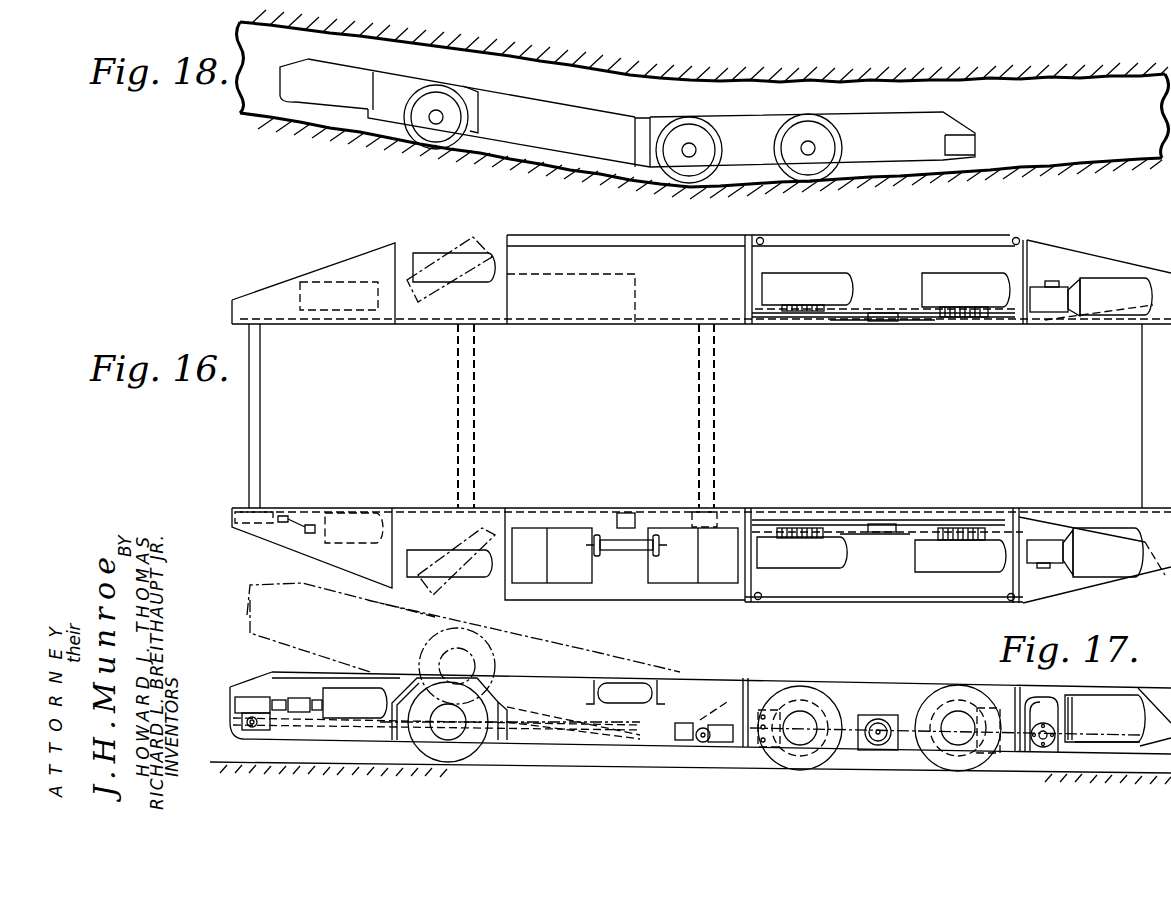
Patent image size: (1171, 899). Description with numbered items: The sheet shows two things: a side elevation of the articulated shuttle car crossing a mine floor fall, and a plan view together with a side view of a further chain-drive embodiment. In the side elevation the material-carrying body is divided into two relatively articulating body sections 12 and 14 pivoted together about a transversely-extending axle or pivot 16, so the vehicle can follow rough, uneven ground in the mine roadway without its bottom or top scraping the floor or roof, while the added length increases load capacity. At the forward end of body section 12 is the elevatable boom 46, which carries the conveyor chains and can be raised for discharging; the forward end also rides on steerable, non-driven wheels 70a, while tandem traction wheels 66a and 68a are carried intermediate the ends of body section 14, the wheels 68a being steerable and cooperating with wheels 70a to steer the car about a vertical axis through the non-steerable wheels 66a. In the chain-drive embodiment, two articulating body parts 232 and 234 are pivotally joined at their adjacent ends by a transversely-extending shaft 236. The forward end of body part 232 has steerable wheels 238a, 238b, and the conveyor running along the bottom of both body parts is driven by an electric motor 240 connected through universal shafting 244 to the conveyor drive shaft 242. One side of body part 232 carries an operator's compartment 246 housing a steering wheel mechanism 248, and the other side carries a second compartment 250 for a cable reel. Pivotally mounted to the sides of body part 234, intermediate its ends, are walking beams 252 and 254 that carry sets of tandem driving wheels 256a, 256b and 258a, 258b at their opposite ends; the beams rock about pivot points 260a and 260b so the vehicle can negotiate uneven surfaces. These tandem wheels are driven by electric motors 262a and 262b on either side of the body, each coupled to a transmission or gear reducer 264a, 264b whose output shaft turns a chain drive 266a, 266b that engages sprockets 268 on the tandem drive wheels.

In FIG. 18, the body section 12 is at (543, 84).
In FIG. 18, the body section 14 is at (768, 122).
In FIG. 18, the transversely-extending axle or pivot 16 is at (660, 186).
In FIG. 18, the elevatable boom 46 is at (336, 53).
In FIG. 18, the traction wheel 66a is at (690, 165).
In FIG. 18, the traction wheel 68a is at (812, 167).
In FIG. 18, the steerable non-driven wheel 70a is at (427, 128).
In FIG. 16, the body part 232 is at (596, 441).
In FIG. 17, the body part 232 is at (568, 660).
In FIG. 16, the body part 234 is at (958, 441).
In FIG. 17, the body part 234 is at (927, 670).
In FIG. 16, the transversely-extending shaft 236 is at (716, 441).
In FIG. 17, the transversely-extending shaft 236 is at (712, 742).
In FIG. 16, the steerable wheel 238a is at (471, 578).
In FIG. 17, the steerable wheel 238a is at (452, 753).
In FIG. 16, the steerable wheel 238b is at (432, 253).
In FIG. 16, the electric motor 240 is at (345, 548).
In FIG. 17, the electric motor 240 is at (367, 716).
In FIG. 16, the drive shaft 242 is at (252, 437).
In FIG. 16, the universal shafting 244 is at (306, 512).
In FIG. 17, the universal shafting 244 is at (298, 714).
In FIG. 16, the operator's compartment 246 is at (634, 599).
In FIG. 17, the operator's compartment 246 is at (604, 748).
In FIG. 17, the steering wheel mechanism 248 is at (628, 680).
In FIG. 16, the second compartment 250 is at (622, 241).
In FIG. 17, the walking beam 252 is at (885, 752).
In FIG. 16, the walking beam 254 is at (872, 324).
In FIG. 16, the tandem driving wheel 256a is at (808, 558).
In FIG. 17, the tandem driving wheel 256a is at (787, 688).
In FIG. 16, the tandem driving wheel 256b is at (838, 267).
In FIG. 16, the tandem driving wheel 258a is at (970, 560).
In FIG. 17, the tandem driving wheel 258a is at (967, 765).
In FIG. 16, the tandem driving wheel 258b is at (995, 267).
In FIG. 16, the pivot point 260a is at (880, 533).
In FIG. 17, the pivot point 260a is at (875, 718).
In FIG. 16, the pivot point 260b is at (887, 324).
In FIG. 16, the electric motor 262a is at (1112, 568).
In FIG. 17, the electric motor 262a is at (1113, 728).
In FIG. 16, the electric motor 262b is at (1120, 285).
In FIG. 16, the transmission or gear reducer 264a is at (1038, 556).
In FIG. 16, the transmission or gear reducer 264b is at (1058, 288).
In FIG. 16, the chain drive 266a is at (905, 535).
In FIG. 16, the chain drive 266b is at (866, 318).
In FIG. 16, the sprocket 268 is at (786, 318).